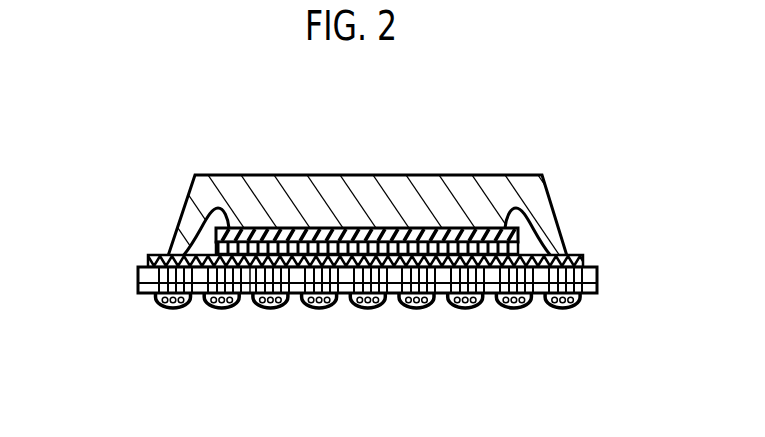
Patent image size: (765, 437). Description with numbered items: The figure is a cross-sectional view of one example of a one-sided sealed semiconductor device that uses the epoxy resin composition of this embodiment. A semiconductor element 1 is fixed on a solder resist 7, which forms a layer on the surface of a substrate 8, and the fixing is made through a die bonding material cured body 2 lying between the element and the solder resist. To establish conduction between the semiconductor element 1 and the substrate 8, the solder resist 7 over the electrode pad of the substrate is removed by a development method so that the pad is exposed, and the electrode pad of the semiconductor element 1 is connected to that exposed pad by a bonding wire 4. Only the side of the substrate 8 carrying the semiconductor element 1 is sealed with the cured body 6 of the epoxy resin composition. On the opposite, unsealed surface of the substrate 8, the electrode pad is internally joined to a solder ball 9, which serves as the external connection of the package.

The semiconductor element 1 is at (405, 227).
The die bonding material cured body 2 is at (250, 272).
The bonding wire 4 is at (553, 209).
The cured body 6 is at (263, 193).
The solder resist 7 is at (165, 257).
The substrate 8 is at (528, 283).
The solder ball 9 is at (458, 303).